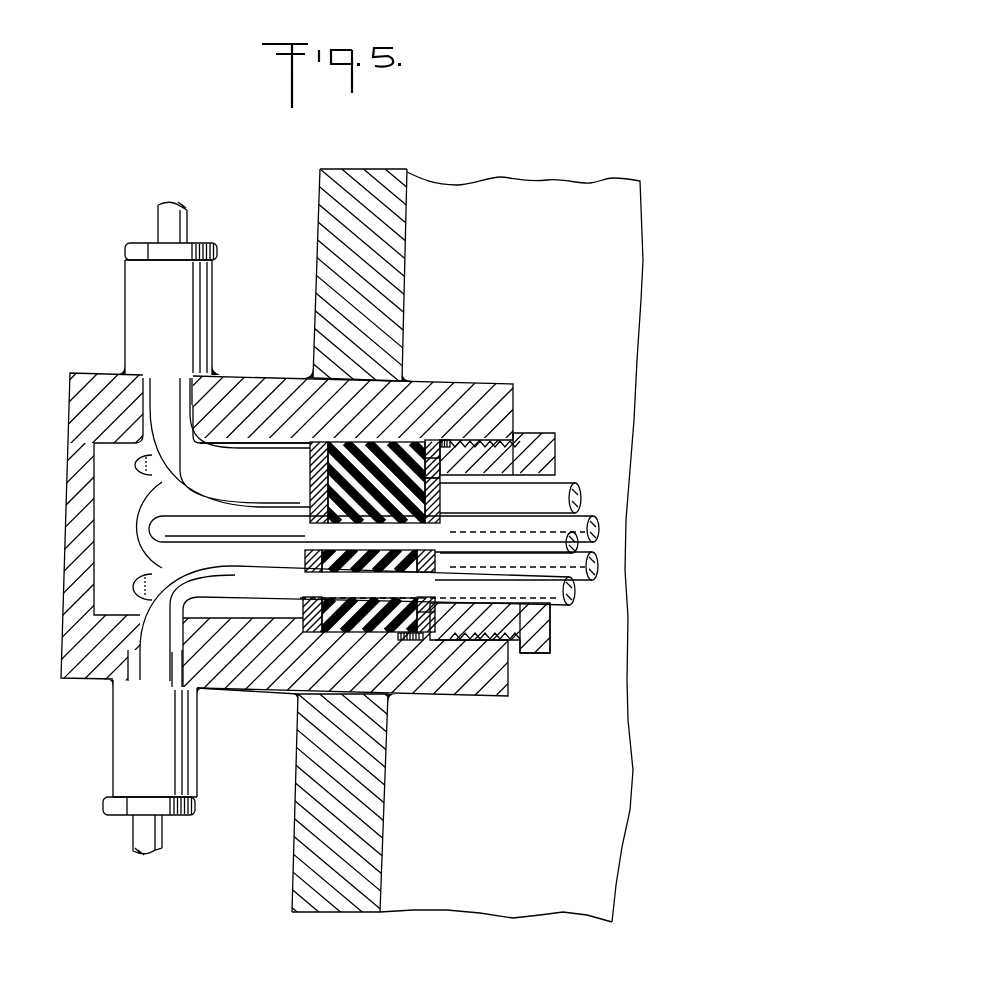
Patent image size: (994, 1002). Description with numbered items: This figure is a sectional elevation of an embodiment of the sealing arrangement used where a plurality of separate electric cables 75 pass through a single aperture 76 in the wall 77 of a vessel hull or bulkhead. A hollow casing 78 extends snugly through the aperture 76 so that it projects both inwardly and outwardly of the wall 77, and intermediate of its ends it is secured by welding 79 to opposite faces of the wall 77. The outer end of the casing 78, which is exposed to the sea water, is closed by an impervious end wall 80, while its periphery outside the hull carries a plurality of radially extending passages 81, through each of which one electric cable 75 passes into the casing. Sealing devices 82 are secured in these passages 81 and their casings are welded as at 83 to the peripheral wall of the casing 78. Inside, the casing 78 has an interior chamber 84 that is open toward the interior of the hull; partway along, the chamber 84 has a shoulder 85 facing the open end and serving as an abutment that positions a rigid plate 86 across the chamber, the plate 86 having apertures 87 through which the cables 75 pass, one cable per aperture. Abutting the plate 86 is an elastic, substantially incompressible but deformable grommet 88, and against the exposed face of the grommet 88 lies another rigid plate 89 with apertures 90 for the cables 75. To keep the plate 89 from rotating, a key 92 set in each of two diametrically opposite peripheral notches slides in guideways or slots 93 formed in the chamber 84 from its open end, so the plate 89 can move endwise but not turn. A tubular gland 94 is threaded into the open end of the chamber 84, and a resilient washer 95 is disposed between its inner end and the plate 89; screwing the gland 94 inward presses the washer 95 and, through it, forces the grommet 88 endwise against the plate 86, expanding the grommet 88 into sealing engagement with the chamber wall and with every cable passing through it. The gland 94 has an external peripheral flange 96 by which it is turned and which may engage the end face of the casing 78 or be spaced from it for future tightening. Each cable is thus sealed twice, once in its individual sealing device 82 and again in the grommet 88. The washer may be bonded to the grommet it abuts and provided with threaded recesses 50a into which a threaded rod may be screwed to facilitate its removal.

The electric cables 75 is at (188, 222).
The aperture 76 is at (312, 688).
The wall 77 is at (400, 218).
The casing 78 is at (232, 668).
The welding 79 is at (307, 373).
The end wall 80 is at (92, 490).
The radially extending passages 81 is at (137, 463).
The sealing devices 82 is at (181, 307).
The weld 83 is at (118, 368).
The interior chamber 84 is at (221, 450).
The shoulder 85 is at (305, 447).
The rigid plate 86 is at (313, 488).
The apertures 87 is at (307, 583).
The grommet 88 is at (337, 521).
The rigid plate 89 is at (458, 500).
The apertures 90 is at (424, 602).
The key 92 is at (439, 440).
The guideways or slots 93 is at (476, 440).
The tubular gland 94 is at (537, 630).
The resilient washer 95 is at (446, 440).
The external peripheral flange 96 is at (549, 647).
The threaded recesses 50a is at (439, 492).